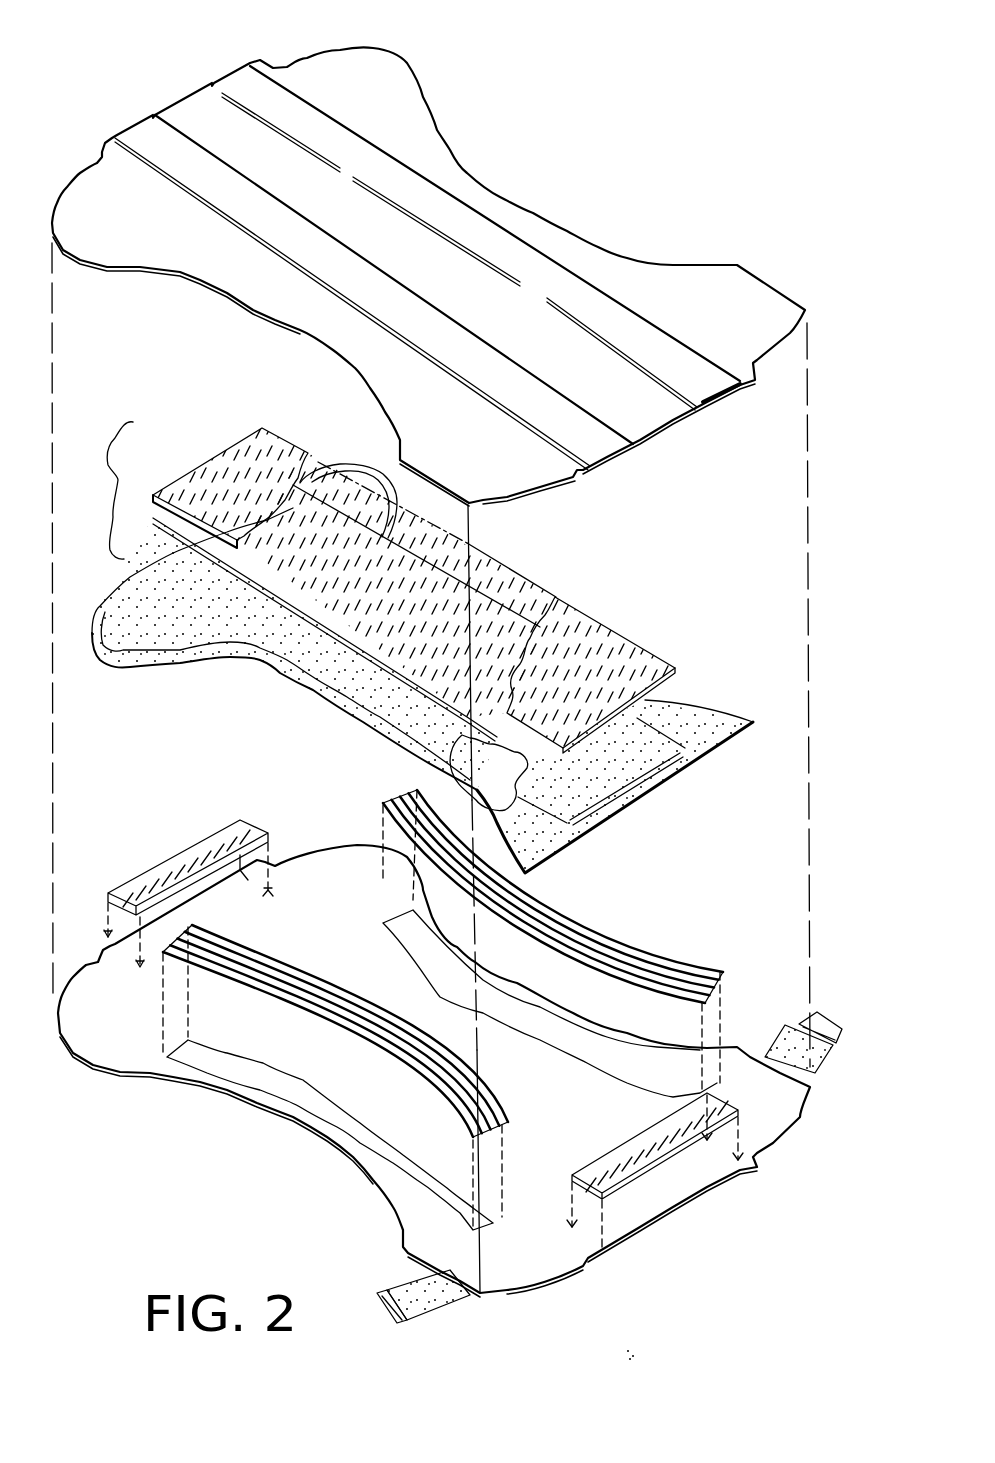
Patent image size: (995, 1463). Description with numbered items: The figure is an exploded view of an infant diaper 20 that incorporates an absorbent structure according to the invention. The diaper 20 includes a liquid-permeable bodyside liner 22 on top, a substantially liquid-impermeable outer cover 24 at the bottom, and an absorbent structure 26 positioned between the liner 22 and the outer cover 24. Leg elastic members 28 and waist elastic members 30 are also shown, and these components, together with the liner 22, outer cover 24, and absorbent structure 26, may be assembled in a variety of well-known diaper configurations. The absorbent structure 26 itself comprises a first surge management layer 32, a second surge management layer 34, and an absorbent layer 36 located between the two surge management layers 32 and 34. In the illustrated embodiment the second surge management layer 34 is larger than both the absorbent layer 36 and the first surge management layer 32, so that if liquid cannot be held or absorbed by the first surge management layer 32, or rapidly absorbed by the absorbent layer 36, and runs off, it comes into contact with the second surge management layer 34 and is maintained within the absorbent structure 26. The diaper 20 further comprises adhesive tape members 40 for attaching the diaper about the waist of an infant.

The diaper 20 is at (735, 75).
The bodyside liner 22 is at (438, 167).
The outer cover 24 is at (107, 1066).
The absorbent structure 26 is at (103, 466).
The leg elastic members 28 is at (330, 1018).
The waist elastic members 30 is at (180, 857).
The first surge management layer 32 is at (597, 624).
The second surge management layer 34 is at (637, 737).
The absorbent layer 36 is at (498, 612).
The adhesive tape members 40 is at (825, 1027).